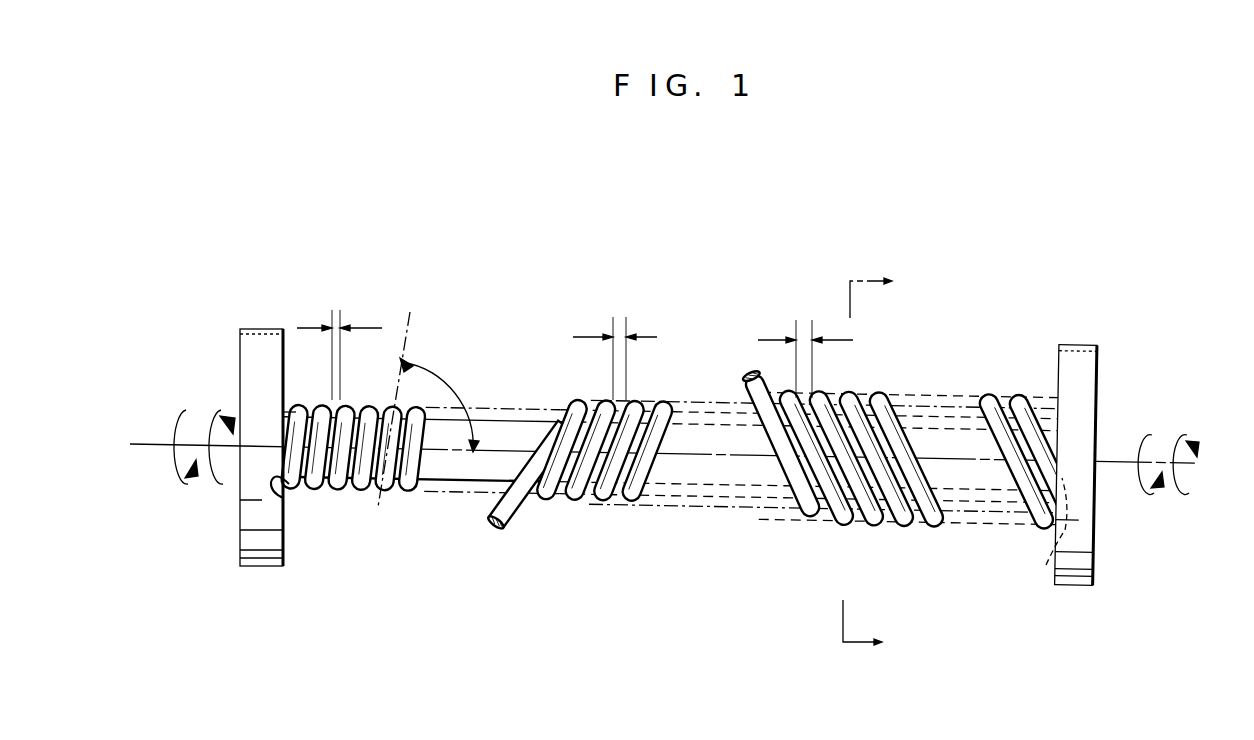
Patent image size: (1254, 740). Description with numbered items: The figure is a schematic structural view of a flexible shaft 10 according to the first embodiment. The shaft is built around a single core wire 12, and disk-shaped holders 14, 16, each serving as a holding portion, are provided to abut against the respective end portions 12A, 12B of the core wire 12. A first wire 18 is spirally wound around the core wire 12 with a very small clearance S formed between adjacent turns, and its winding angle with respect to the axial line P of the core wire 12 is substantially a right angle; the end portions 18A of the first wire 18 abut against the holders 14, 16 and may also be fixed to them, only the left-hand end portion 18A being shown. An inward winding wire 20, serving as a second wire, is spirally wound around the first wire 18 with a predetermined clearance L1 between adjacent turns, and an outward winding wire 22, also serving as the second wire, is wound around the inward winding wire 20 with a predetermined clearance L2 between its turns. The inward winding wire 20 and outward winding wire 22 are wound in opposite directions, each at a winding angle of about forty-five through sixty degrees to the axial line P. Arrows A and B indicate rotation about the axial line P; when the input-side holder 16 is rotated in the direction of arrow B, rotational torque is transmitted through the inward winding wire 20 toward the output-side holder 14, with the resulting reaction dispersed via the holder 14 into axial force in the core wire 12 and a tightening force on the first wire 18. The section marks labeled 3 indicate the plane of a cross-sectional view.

The flexible shaft 10 is at (657, 280).
The core wire 12 is at (447, 470).
The end portion of the core wire 12A is at (293, 400).
The end portion of the core wire 12B is at (1046, 565).
The holder 14 is at (262, 345).
The holder 16 is at (1067, 352).
The first wire 18 is at (305, 402).
The end portion of the first wire 18A is at (280, 488).
The inward winding wire 20 is at (633, 405).
The outward winding wire 22 is at (888, 393).
The clearance S is at (336, 310).
The clearance L1 is at (617, 318).
The clearance L2 is at (798, 325).
The axial line P is at (150, 447).
The arrow A is at (178, 484).
The arrow B is at (215, 490).
The section line for FIG. 3 is at (877, 464).